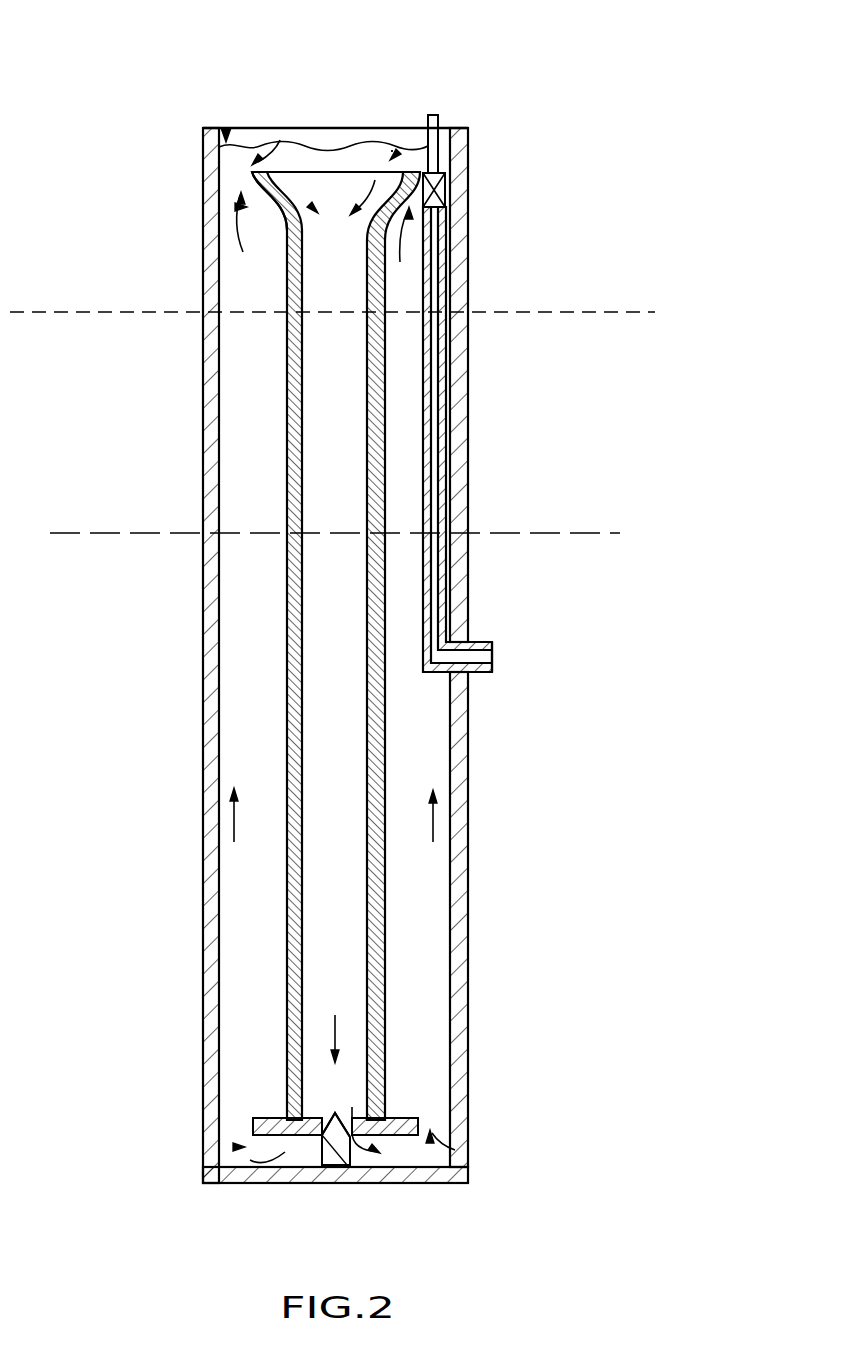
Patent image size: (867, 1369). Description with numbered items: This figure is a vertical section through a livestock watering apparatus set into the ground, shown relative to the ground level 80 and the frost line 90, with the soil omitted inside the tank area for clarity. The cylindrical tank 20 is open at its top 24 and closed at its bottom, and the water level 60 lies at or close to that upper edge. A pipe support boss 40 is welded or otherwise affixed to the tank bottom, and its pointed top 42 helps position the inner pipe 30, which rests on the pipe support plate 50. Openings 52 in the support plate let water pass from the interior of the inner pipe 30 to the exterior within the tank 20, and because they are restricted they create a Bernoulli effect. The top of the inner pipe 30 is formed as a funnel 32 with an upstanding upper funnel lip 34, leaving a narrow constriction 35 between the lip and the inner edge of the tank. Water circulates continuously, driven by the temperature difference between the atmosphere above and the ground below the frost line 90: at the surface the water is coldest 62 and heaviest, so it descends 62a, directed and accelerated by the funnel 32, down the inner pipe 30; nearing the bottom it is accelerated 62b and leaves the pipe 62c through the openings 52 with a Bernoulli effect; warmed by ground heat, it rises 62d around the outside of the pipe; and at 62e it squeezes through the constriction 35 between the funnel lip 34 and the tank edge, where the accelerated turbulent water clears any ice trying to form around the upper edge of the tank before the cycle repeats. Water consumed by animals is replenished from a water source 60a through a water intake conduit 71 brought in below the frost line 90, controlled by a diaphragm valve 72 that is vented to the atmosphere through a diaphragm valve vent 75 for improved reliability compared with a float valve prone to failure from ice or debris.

The tank 20 is at (205, 133).
The open top of tank 24 is at (418, 126).
The inner pipe 30 is at (290, 408).
The funnel 32 is at (275, 213).
The upper funnel lip 34 is at (252, 175).
The constriction between funnel edge and tank edge 35 is at (226, 130).
The pipe support boss 40 is at (323, 1153).
The pointed top of pipe support boss 42 is at (335, 1110).
The pipe support plate 50 is at (418, 1118).
The openings in pipe support plate 52 is at (365, 1125).
The water level 60 is at (335, 128).
The water source for replenishing water in tank 60a is at (500, 657).
The coldest water starting to descend 62 is at (280, 140).
The cold water being directed and accelerated by funnel 62a is at (315, 213).
The accelerated cold water nearing bottom of pipe 62b is at (340, 1023).
The cold water leaving pipe with Bernoulli effect 62c is at (240, 1147).
The warmed water rising about pipe 62d is at (234, 828).
The warmed water flowing between funnel lip and tank edge 62e is at (245, 207).
The water intake conduit 71 is at (440, 370).
The diaphragm valve 72 is at (446, 182).
The diaphragm valve vent 75 is at (440, 120).
The ground level 80 is at (655, 313).
The frost line 90 is at (560, 532).